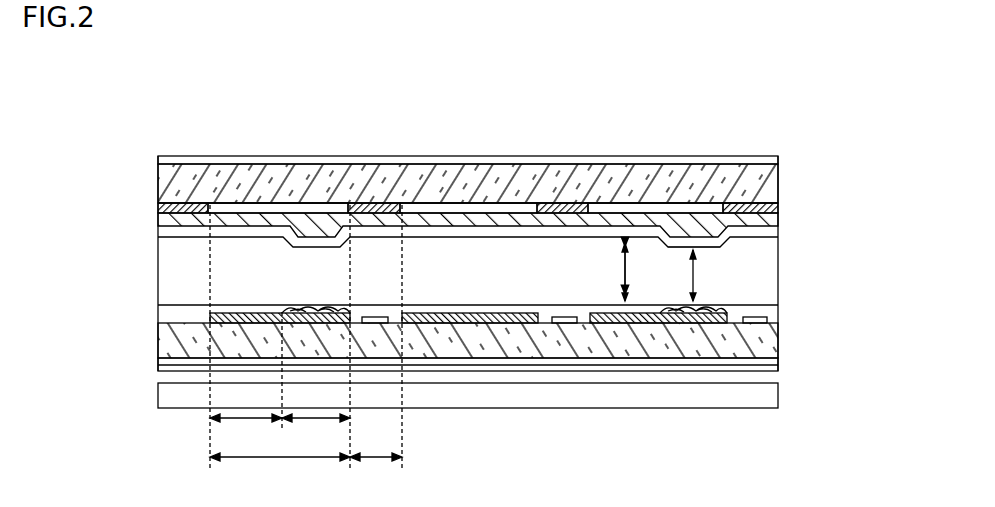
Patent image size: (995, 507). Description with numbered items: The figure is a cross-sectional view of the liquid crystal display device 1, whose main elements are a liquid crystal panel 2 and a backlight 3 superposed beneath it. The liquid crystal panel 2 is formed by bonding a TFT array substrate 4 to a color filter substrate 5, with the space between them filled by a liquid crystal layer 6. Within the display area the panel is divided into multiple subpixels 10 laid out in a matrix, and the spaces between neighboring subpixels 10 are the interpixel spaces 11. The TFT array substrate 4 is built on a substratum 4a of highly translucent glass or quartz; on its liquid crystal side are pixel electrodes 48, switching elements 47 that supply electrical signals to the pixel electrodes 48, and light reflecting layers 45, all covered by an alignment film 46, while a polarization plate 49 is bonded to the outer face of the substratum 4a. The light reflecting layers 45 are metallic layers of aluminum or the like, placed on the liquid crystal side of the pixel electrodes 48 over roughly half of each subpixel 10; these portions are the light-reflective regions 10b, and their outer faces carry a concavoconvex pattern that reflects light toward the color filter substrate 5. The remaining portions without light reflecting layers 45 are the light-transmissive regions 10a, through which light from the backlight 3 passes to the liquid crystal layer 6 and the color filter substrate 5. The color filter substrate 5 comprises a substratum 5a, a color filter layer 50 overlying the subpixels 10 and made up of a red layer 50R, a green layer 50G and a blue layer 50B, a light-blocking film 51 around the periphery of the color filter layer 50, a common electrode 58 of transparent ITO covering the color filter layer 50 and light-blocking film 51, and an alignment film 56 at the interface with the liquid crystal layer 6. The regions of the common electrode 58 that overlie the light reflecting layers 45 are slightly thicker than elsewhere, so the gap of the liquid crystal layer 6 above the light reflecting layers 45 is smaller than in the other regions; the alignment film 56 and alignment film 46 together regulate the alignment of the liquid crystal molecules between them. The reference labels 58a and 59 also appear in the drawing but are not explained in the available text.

The liquid crystal display device 1 is at (674, 90).
The liquid crystal panel 2 is at (156, 167).
The backlight 3 is at (156, 383).
The TFT array substrate 4 is at (846, 272).
The substratum 4a is at (778, 340).
The color filter substrate 5 is at (846, 137).
The substratum 5a is at (778, 186).
The liquid crystal layer 6 is at (158, 271).
The subpixel 10 is at (280, 349).
The light-transmissive region 10a is at (246, 432).
The light-reflective region 10b is at (316, 381).
The interpixel space 11 is at (376, 349).
The light reflecting layer 45 is at (430, 315).
The alignment film 46 is at (778, 305).
The switching element 47 is at (557, 326).
The pixel electrode 48 is at (778, 318).
The polarization plate 49 is at (778, 365).
The color filter layer 50 is at (608, 116).
The red layer 50R is at (323, 207).
The green layer 50G is at (458, 207).
The blue layer 50B is at (593, 207).
The light-blocking film 51 is at (196, 200).
The alignment film 56 is at (778, 232).
The common electrode 58 is at (778, 212).
The recess portion 58a is at (694, 218).
The polarizing plate 59 is at (778, 160).